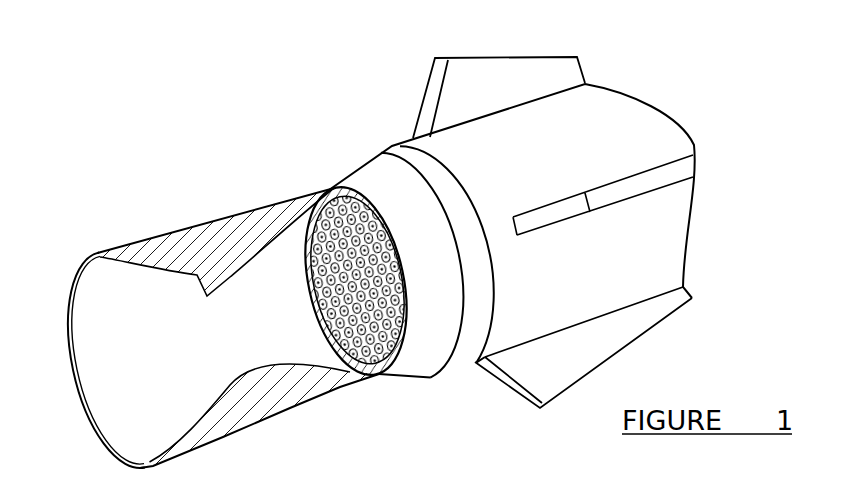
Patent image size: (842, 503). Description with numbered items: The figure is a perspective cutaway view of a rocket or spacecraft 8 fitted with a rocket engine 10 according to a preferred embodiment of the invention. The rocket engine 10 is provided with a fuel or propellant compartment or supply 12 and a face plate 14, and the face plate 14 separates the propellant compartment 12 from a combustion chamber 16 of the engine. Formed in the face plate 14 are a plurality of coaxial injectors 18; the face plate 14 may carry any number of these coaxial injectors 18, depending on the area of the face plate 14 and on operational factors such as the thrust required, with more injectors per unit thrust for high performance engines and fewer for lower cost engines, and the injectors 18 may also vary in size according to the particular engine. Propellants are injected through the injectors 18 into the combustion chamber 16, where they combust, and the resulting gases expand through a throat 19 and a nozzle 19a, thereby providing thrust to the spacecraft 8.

The rocket engine 10 is at (486, 255).
The propellant compartment 12 is at (652, 252).
The spacecraft 8 is at (539, 412).
The face plate 14 is at (281, 241).
The combustion chamber 16 is at (311, 332).
The coaxial injectors 18 is at (374, 342).
The throat 19 is at (227, 324).
The nozzle 19a is at (97, 343).